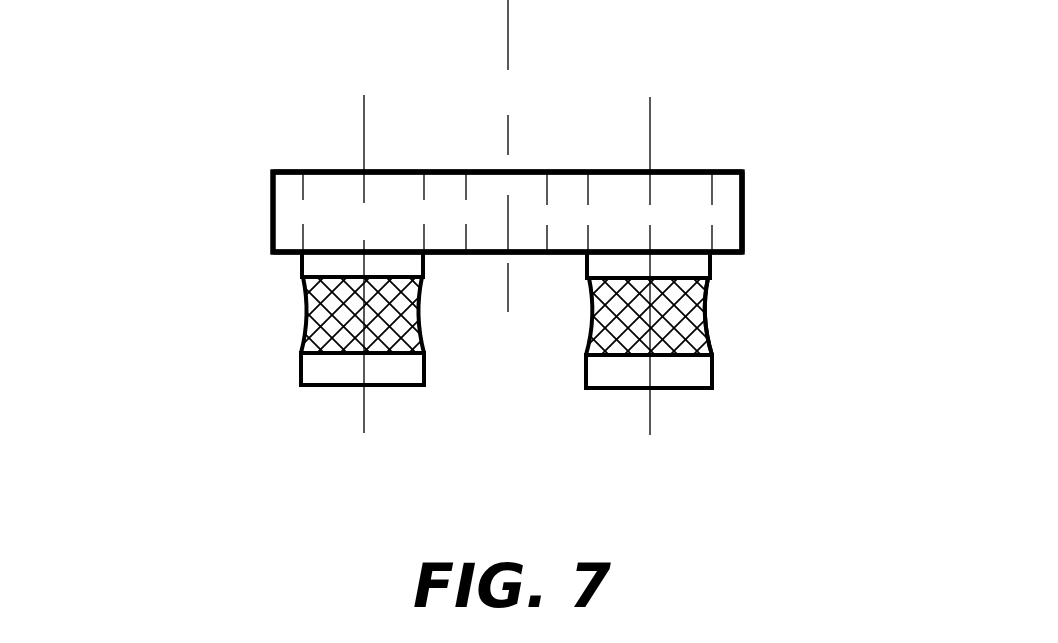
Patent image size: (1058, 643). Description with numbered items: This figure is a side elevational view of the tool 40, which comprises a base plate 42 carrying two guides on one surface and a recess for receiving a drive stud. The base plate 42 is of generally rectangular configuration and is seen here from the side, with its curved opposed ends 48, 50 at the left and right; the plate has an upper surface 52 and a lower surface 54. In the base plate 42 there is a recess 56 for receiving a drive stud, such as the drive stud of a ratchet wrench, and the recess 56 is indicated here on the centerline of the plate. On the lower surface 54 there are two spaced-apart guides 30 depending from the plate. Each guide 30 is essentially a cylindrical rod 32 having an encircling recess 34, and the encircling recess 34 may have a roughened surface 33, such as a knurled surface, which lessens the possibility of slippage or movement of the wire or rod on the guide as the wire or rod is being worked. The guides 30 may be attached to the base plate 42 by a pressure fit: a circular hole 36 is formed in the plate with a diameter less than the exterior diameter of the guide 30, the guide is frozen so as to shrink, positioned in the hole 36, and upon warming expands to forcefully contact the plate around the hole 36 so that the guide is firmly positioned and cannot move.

The guide 30 is at (334, 394).
The cylindrical rod 32 is at (297, 270).
The roughened surface 33 is at (708, 320).
The encircling recess 34 is at (417, 313).
The circular hole 36 is at (425, 172).
The tool 40 is at (683, 166).
The base plate 42 is at (752, 190).
The curved opposed end 48 is at (270, 212).
The curved opposed end 50 is at (745, 218).
The upper surface 52 is at (328, 172).
The lower surface 54 is at (290, 257).
The recess 56 is at (483, 172).